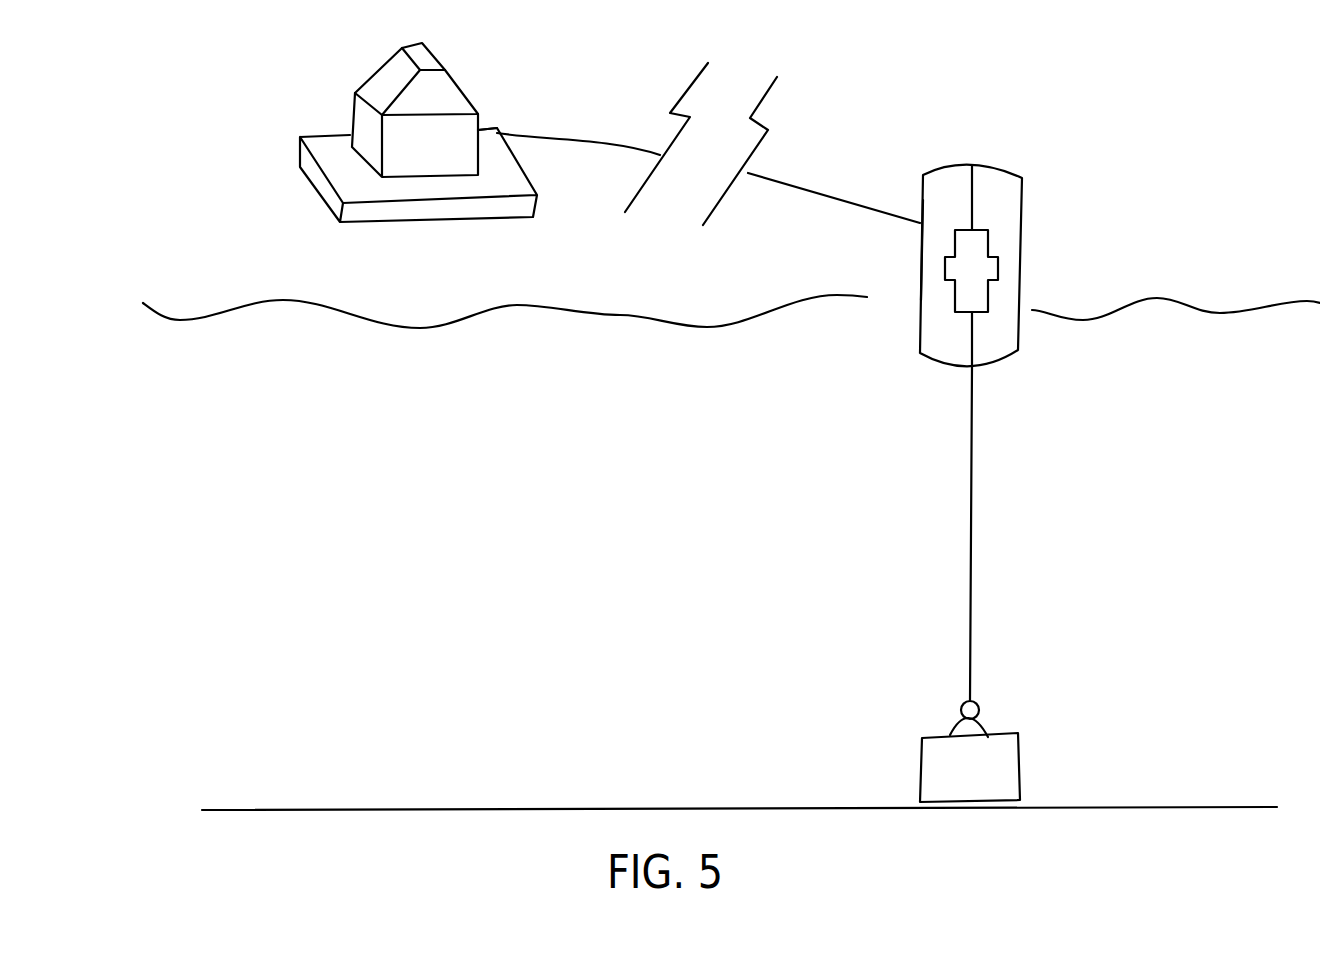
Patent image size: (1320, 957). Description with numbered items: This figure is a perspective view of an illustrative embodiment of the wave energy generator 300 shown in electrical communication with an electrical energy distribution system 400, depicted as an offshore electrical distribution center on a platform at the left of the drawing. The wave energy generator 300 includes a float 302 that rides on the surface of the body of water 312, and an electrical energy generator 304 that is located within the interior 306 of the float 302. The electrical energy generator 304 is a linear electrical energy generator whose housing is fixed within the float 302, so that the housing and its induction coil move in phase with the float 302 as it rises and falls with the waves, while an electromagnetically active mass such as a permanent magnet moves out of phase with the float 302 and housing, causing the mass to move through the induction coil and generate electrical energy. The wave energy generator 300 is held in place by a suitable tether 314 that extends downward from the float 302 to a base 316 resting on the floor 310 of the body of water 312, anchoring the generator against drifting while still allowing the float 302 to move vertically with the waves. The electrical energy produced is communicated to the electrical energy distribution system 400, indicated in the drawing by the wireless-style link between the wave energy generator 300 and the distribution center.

The electrical energy distribution system 400 is at (365, 123).
The wave energy generator 300 is at (1102, 163).
The float 302 is at (1027, 220).
The electrical energy generator 304 is at (988, 312).
The interior 306 is at (928, 252).
The tether 314 is at (972, 598).
The body of water 312 is at (1176, 458).
The base 316 is at (978, 767).
The floor 310 is at (652, 808).